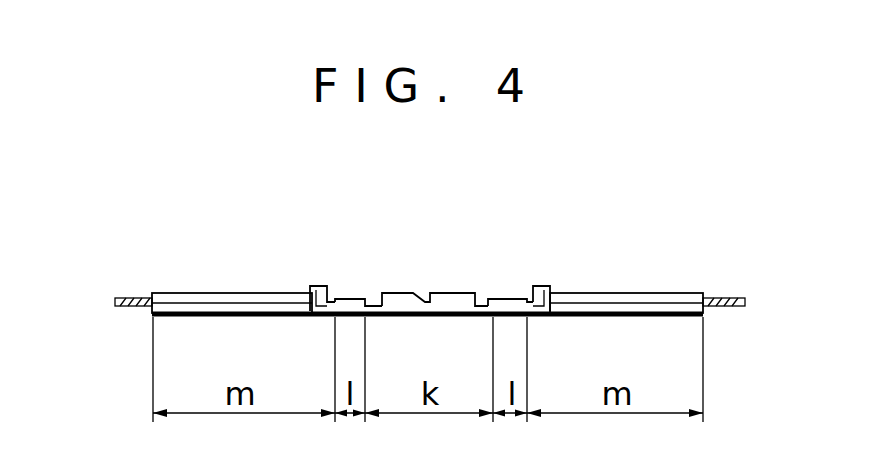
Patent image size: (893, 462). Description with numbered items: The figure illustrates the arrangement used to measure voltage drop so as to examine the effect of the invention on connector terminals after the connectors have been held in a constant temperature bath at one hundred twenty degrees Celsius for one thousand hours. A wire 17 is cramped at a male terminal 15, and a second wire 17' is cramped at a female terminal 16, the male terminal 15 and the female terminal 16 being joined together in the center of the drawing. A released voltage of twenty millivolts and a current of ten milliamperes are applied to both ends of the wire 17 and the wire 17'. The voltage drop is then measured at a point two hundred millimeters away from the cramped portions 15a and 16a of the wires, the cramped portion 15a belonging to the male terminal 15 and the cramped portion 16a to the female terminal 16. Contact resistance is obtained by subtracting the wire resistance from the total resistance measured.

The wire 17 is at (213, 253).
The cramped portion 15a is at (315, 287).
The male terminal 15 is at (357, 297).
The female terminal 16 is at (498, 297).
The cramped portion 16a is at (543, 287).
The wire 17' is at (647, 257).